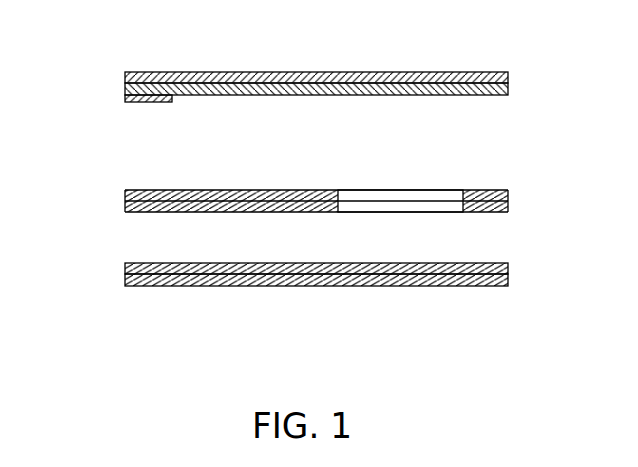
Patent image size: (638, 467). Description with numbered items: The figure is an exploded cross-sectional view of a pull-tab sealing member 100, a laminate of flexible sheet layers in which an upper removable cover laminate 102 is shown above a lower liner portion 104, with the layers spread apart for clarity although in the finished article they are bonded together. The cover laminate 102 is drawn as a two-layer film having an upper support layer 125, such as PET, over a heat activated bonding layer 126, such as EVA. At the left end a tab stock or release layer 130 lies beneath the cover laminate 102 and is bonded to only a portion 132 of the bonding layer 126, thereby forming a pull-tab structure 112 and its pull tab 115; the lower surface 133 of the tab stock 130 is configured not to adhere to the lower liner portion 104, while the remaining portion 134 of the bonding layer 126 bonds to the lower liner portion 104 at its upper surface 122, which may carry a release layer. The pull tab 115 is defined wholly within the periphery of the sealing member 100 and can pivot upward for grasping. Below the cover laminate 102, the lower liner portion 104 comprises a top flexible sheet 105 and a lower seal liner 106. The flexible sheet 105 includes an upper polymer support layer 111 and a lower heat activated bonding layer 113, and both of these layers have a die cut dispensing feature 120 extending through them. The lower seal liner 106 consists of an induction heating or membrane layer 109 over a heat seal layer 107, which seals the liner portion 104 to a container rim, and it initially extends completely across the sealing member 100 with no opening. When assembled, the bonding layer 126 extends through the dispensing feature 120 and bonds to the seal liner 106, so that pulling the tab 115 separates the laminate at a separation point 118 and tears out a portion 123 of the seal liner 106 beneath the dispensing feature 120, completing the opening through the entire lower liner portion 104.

The sealing member 100 is at (499, 47).
The removable cover laminate 102 is at (116, 73).
The lower liner portion 104 is at (75, 193).
The flexible sheet 105 is at (117, 196).
The lower seal liner 106 is at (117, 277).
The heat seal layer 107 is at (508, 285).
The induction heating or membrane layer 109 is at (508, 264).
The upper polymer support layer 111 is at (508, 191).
The pull-tab structure 112 is at (277, 63).
The lower heat activated bonding layer 113 is at (508, 207).
The pull tab 115 is at (188, 71).
The separation point 118 is at (494, 177).
The dispensing feature 120 is at (411, 194).
The upper surface of the lower liner portion 122 is at (190, 190).
The portion of the lower seal liner 123 is at (412, 283).
The upper support layer 125 is at (508, 79).
The bonding layer 126 is at (508, 88).
The tab stock or release layer 130 is at (172, 99).
The portion of the bonding layer 132 is at (146, 82).
The lower surface of the tab stock 133 is at (150, 101).
The portion of the bonding layer 134 is at (395, 96).